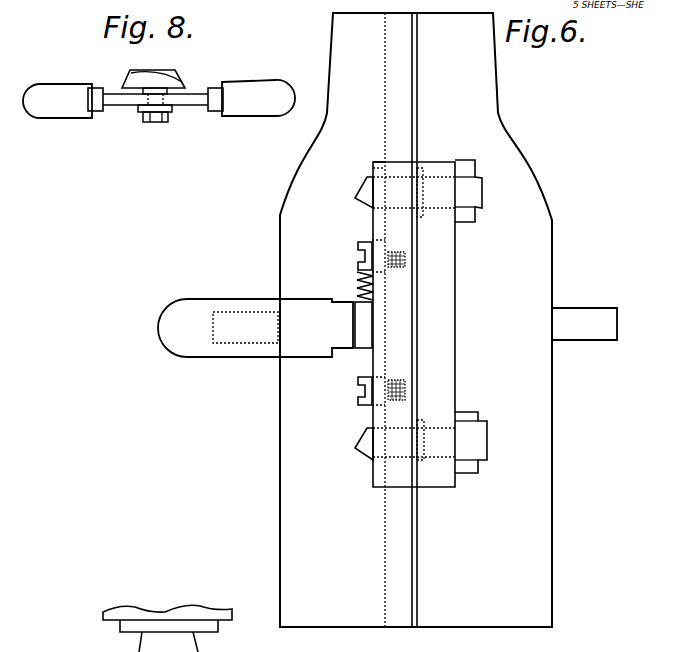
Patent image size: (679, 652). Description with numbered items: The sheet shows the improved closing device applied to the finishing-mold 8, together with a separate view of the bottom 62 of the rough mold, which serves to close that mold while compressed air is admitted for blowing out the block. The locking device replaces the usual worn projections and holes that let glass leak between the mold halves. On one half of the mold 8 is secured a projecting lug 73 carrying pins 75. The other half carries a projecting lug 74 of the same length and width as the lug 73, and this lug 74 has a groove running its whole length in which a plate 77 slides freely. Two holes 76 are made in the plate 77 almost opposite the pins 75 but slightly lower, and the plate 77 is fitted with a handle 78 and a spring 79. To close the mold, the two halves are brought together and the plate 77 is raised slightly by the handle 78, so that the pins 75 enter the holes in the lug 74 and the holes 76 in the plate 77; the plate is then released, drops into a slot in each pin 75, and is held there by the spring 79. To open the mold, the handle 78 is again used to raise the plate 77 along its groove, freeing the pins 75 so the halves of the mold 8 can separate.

In FIG. 6, the finishing-mold 8 is at (545, 283).
In FIG. 8, the bottom of the rough mold 62 is at (178, 82).
In FIG. 6, the projecting lug 73 is at (446, 243).
In FIG. 6, the projecting lug 74 is at (398, 233).
In FIG. 6, the pins 75 is at (361, 199).
In FIG. 6, the holes 76 is at (398, 218).
In FIG. 6, the plate 77 is at (383, 167).
In FIG. 6, the handle 78 is at (184, 306).
In FIG. 6, the spring 79 is at (354, 288).